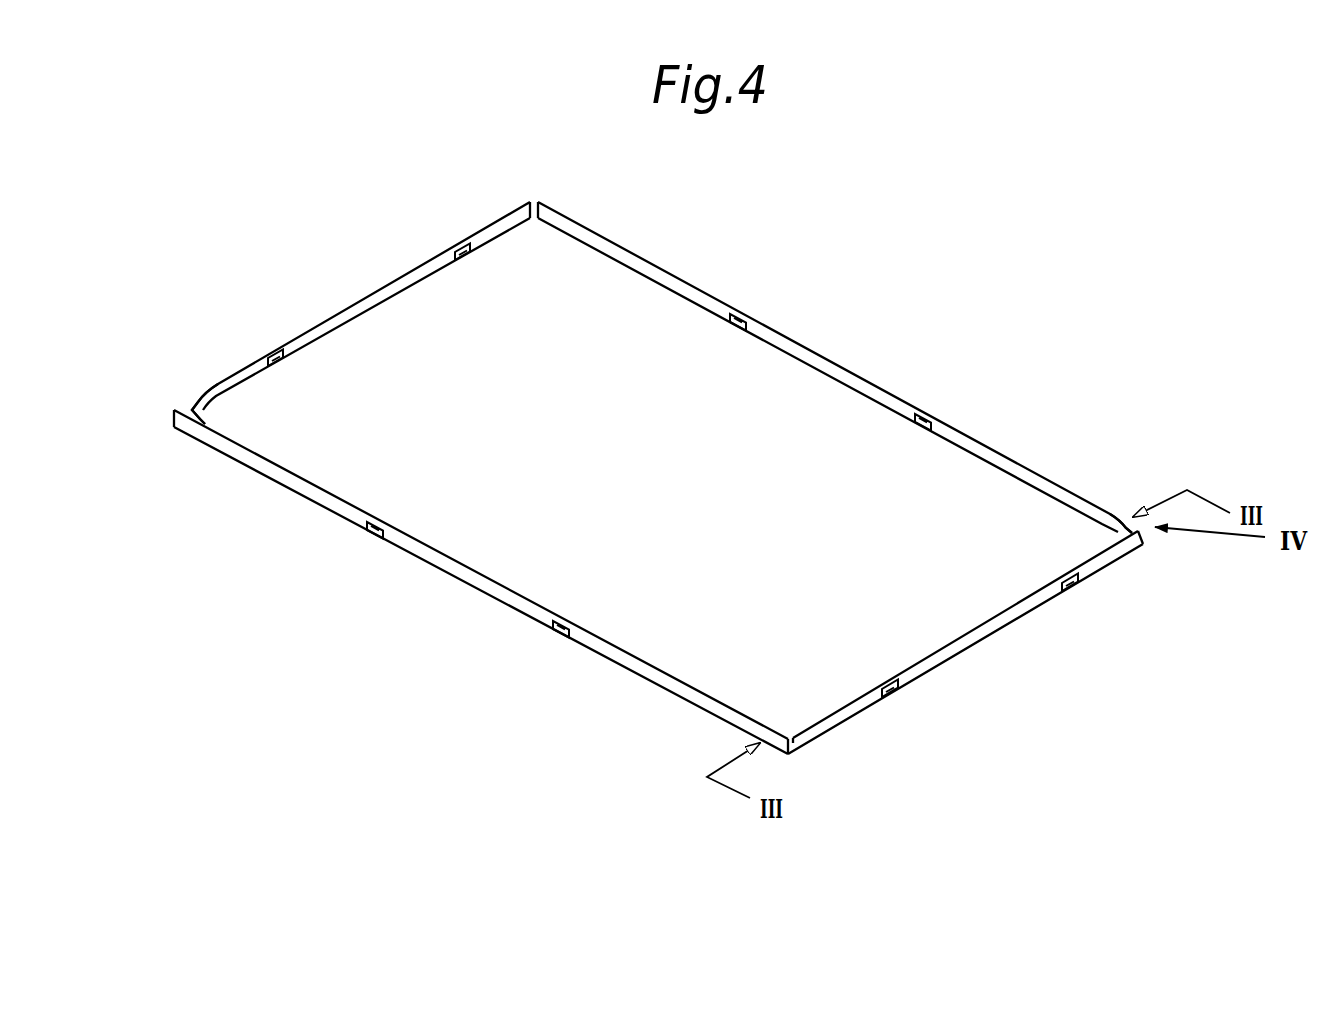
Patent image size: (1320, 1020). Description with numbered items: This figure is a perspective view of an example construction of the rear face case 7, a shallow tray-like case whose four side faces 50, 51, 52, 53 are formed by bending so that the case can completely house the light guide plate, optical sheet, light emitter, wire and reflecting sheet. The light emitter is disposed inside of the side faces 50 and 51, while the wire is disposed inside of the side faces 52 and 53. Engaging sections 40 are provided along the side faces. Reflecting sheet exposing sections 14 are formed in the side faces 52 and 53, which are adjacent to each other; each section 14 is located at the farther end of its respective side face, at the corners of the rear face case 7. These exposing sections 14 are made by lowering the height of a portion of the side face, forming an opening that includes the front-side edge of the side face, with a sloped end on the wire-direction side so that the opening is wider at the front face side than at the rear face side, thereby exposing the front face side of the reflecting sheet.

The rear face case 7 is at (873, 310).
The reflecting sheet exposing section 14 is at (192, 392).
The engaging section 40 is at (470, 249).
The side face 50 is at (507, 597).
The side face 51 is at (1012, 615).
The side face 52 is at (812, 352).
The side face 53 is at (378, 305).